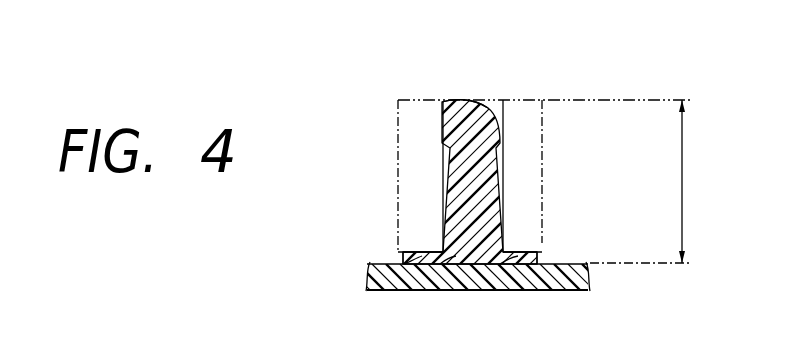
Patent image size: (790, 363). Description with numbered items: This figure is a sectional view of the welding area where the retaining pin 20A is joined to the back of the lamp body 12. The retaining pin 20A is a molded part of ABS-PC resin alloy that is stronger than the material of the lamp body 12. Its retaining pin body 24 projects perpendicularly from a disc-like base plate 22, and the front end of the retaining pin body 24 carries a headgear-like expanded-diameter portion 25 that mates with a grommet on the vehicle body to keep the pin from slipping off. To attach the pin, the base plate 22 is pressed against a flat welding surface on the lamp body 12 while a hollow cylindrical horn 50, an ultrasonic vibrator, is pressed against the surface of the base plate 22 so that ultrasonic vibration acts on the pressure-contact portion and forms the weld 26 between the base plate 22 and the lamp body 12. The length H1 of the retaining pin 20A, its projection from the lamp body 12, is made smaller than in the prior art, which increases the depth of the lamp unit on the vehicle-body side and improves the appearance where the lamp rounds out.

The hollow cylindrical horn 50 is at (406, 100).
The retaining pin body 24 is at (498, 160).
The retaining pin 20A is at (447, 190).
The expanded-diameter portion 25 is at (443, 108).
The base plate 22 is at (538, 258).
The lamp body 12 is at (555, 290).
The weld 26 is at (427, 262).
The length of the retaining pin H1 is at (652, 181).